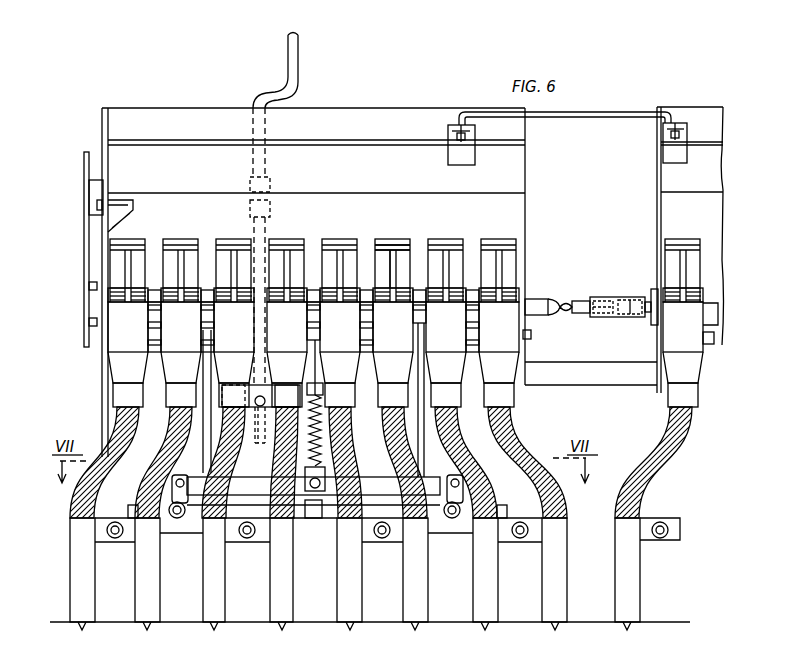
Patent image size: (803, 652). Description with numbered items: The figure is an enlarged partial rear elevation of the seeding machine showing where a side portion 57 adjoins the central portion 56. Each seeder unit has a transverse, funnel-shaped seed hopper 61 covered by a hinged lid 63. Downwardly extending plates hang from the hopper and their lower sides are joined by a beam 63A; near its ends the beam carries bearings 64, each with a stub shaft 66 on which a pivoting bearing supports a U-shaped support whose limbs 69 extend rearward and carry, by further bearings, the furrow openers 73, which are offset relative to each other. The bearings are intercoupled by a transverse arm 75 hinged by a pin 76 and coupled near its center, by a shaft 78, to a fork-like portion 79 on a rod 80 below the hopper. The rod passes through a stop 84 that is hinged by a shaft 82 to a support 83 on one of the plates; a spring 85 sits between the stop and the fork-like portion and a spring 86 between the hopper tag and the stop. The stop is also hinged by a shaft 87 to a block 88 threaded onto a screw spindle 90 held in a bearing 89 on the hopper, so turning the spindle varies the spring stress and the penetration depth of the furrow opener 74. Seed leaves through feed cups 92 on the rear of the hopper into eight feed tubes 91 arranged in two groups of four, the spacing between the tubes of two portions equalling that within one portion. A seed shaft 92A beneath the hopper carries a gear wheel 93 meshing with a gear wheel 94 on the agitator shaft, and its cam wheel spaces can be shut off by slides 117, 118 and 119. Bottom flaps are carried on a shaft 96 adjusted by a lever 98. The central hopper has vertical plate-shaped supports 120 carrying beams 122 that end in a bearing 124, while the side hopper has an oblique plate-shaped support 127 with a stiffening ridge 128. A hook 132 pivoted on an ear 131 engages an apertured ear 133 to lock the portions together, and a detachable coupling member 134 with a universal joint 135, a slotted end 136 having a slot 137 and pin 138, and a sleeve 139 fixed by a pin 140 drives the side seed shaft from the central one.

The central portion 56 is at (649, 215).
The portion 57 is at (534, 179).
The seed hopper 61 is at (528, 215).
The lid 63 is at (193, 109).
The beam 63A is at (304, 520).
The bearing 64 is at (134, 505).
The stub shaft 66 is at (190, 522).
The limb 69 is at (113, 540).
The furrow opener 73 is at (137, 603).
The furrow opener 74 is at (602, 626).
The arm 75 is at (427, 478).
The pin 76 is at (170, 476).
The shaft 78 is at (318, 512).
The fork-like portion 79 is at (326, 472).
The rod 80 is at (326, 464).
The shaft 82 is at (236, 385).
The support 83 is at (218, 410).
The stop 84 is at (284, 385).
The spring 85 is at (326, 448).
The spring 86 is at (324, 385).
The shaft 87 is at (256, 420).
The block 88 is at (272, 412).
The bearing 89 is at (272, 186).
The screw spindle 90 is at (299, 62).
The feed tube 91 is at (173, 418).
The feed cup 92 is at (508, 356).
The seed shaft 92A is at (369, 316).
The gear wheel 93 is at (88, 322).
The gear wheel 94 is at (88, 286).
The shaft 96 is at (526, 340).
The lever 98 is at (90, 152).
The slide 117 is at (391, 240).
The slide 118 is at (400, 240).
The slide 119 is at (408, 241).
The vertical plate-shaped support 120 is at (655, 393).
The beam 122 is at (553, 387).
The bearing 124 is at (440, 373).
The plate-shaped support 127 is at (104, 373).
The stiffening ridge 128 is at (134, 205).
The ear 131 is at (688, 125).
The hook 132 is at (566, 120).
The apertured ear 133 is at (447, 130).
The detachable coupling member 134 is at (612, 297).
The universal joint 135 is at (549, 297).
The end 136 is at (580, 301).
The slot 137 is at (588, 318).
The pin 138 is at (604, 318).
The sleeve 139 is at (636, 297).
The pin 140 is at (640, 318).